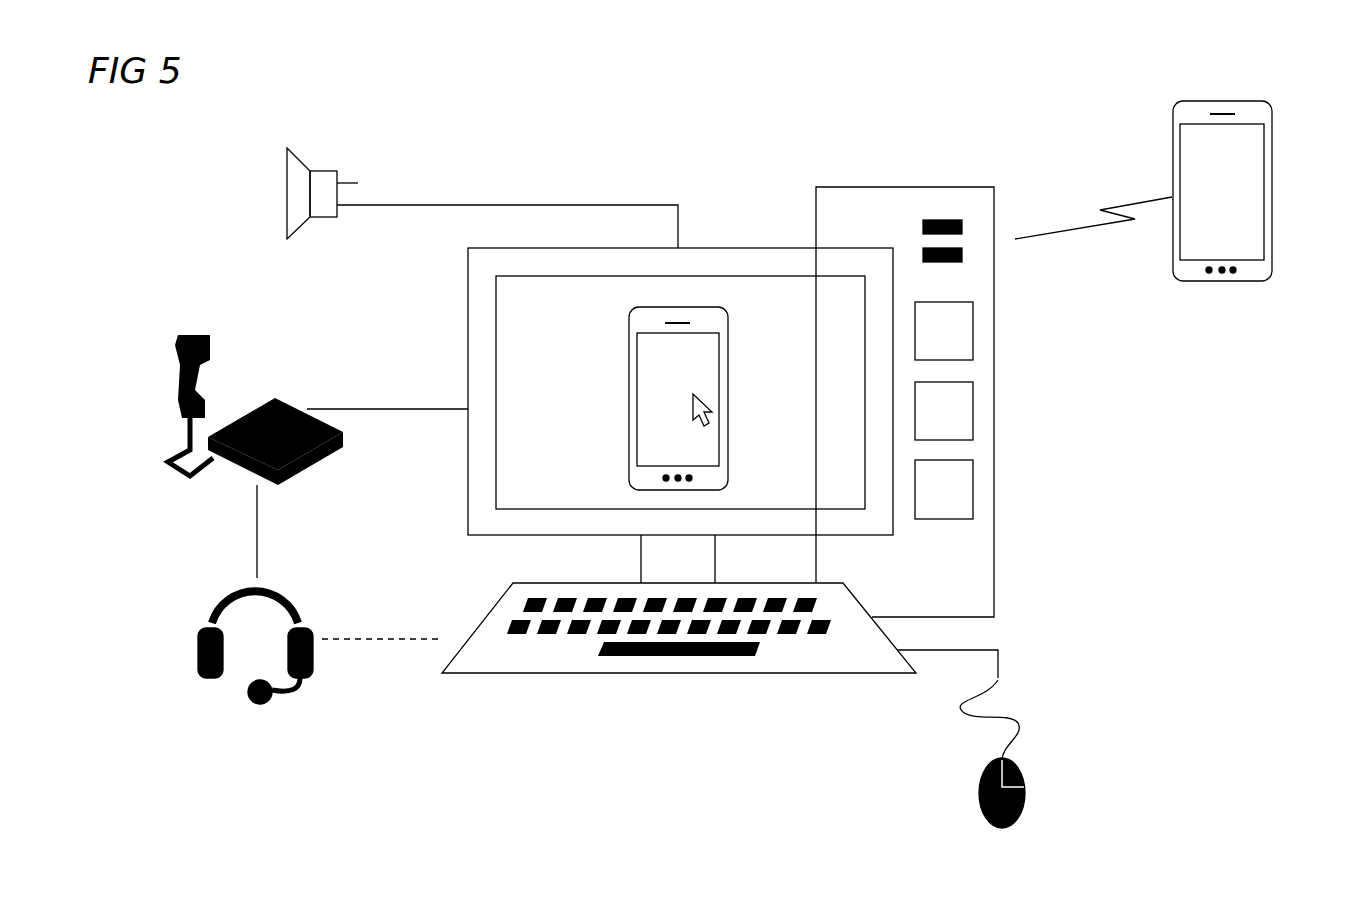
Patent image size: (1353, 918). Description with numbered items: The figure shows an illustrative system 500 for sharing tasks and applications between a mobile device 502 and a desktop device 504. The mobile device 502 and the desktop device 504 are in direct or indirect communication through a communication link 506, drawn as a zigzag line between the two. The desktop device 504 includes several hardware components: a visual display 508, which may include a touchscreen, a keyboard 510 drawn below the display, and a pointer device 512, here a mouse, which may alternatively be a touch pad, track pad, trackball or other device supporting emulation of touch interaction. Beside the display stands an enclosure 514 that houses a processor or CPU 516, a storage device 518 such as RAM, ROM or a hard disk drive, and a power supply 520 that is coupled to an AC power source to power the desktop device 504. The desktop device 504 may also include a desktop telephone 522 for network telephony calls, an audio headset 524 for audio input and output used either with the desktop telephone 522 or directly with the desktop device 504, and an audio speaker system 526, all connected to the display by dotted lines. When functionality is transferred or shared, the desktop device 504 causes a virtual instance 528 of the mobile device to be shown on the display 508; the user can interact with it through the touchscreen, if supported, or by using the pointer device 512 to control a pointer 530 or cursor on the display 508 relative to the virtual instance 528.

The system 500 is at (712, 84).
The mobile device 502 is at (1272, 140).
The desktop device 504 is at (757, 178).
The communication link 506 is at (1108, 207).
The visual display 508 is at (468, 277).
The keyboard 510 is at (525, 692).
The pointer device 512 is at (1025, 767).
The enclosure 514 is at (859, 185).
The processor 516 is at (973, 307).
The storage device 518 is at (973, 467).
The power supply 520 is at (973, 387).
The desktop telephone 522 is at (298, 362).
The audio headset 524 is at (303, 613).
The audio speaker system 526 is at (338, 168).
The virtual instance of the mobile device 528 is at (629, 340).
The pointer 530 is at (700, 397).